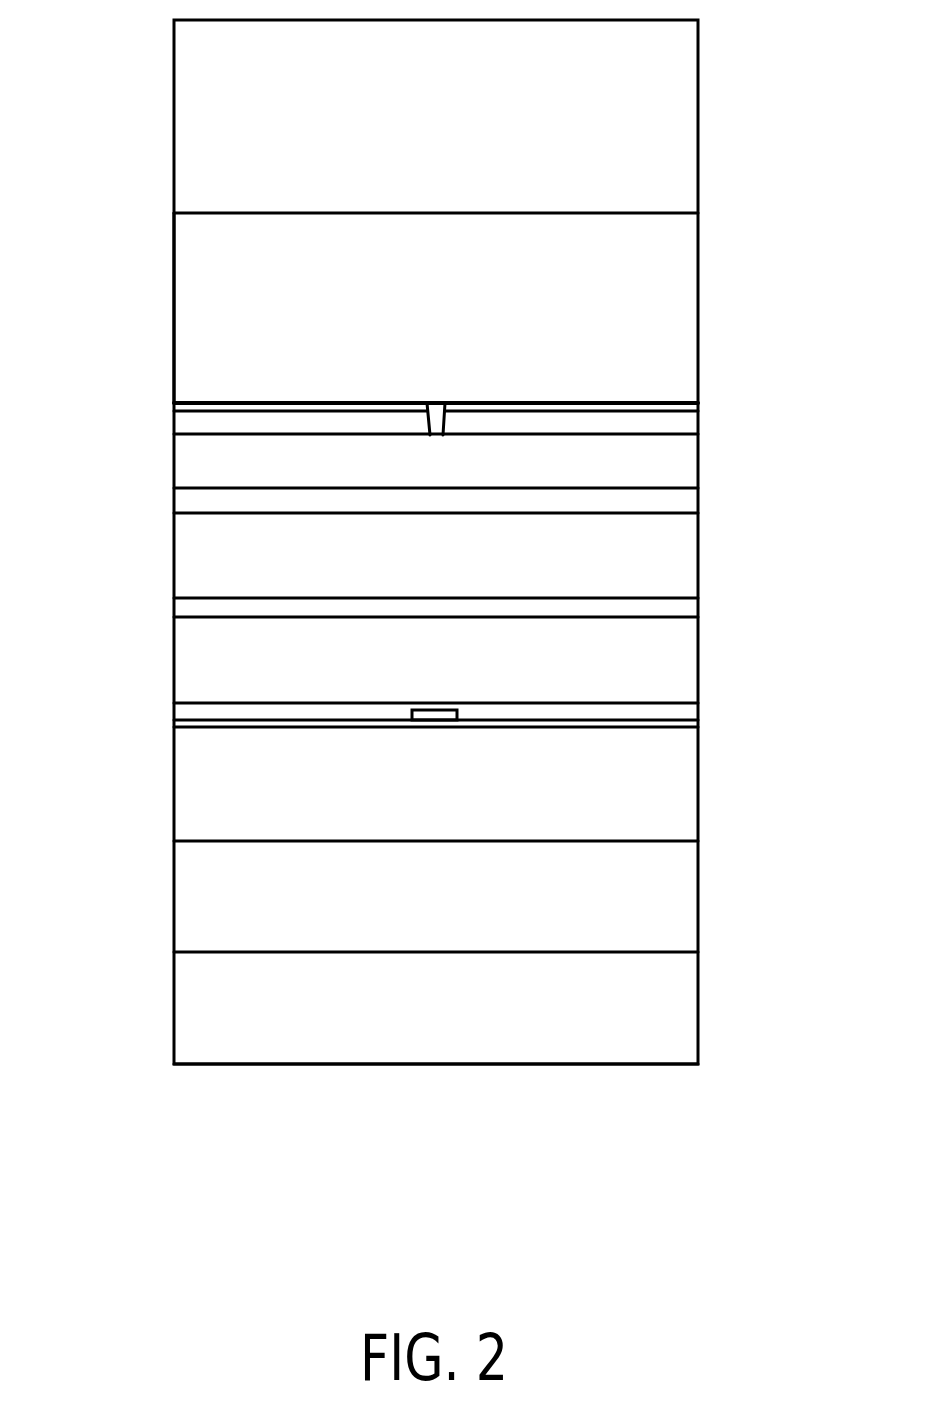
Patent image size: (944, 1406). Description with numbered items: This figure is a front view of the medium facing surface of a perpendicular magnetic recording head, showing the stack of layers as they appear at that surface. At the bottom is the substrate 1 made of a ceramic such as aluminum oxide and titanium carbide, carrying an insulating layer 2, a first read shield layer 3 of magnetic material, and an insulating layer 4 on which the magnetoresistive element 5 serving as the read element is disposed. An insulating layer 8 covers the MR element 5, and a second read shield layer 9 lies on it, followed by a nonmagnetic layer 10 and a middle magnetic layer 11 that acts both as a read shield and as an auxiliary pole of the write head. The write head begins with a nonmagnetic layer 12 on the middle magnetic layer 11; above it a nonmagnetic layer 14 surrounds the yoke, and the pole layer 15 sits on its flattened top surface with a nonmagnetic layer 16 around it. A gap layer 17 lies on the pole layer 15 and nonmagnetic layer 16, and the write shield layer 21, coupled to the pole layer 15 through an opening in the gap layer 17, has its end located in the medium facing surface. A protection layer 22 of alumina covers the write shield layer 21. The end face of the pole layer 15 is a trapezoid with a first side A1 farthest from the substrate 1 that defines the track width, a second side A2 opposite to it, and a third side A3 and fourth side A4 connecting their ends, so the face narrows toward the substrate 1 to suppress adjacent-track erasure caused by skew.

The substrate 1 is at (247, 1035).
The insulating layer 2 is at (290, 932).
The first read shield layer 3 is at (348, 817).
The insulating layer 4 is at (493, 710).
The magnetoresistive (MR) element 5 is at (430, 716).
The insulating layer 8 is at (546, 708).
The second read shield layer 9 is at (595, 680).
The nonmagnetic layer 10 is at (686, 607).
The middle magnetic layer 11 is at (686, 571).
The nonmagnetic layer 12 is at (686, 497).
The nonmagnetic layer 14 is at (686, 460).
The pole layer 15 is at (424, 402).
The nonmagnetic layer 16 is at (688, 423).
The gap layer 17 is at (700, 405).
The write shield layer 21 is at (174, 302).
The protection layer 22 is at (683, 151).
The first side A1 is at (433, 435).
The second side A2 is at (433, 435).
The third side A3 is at (427, 423).
The fourth side A4 is at (445, 423).